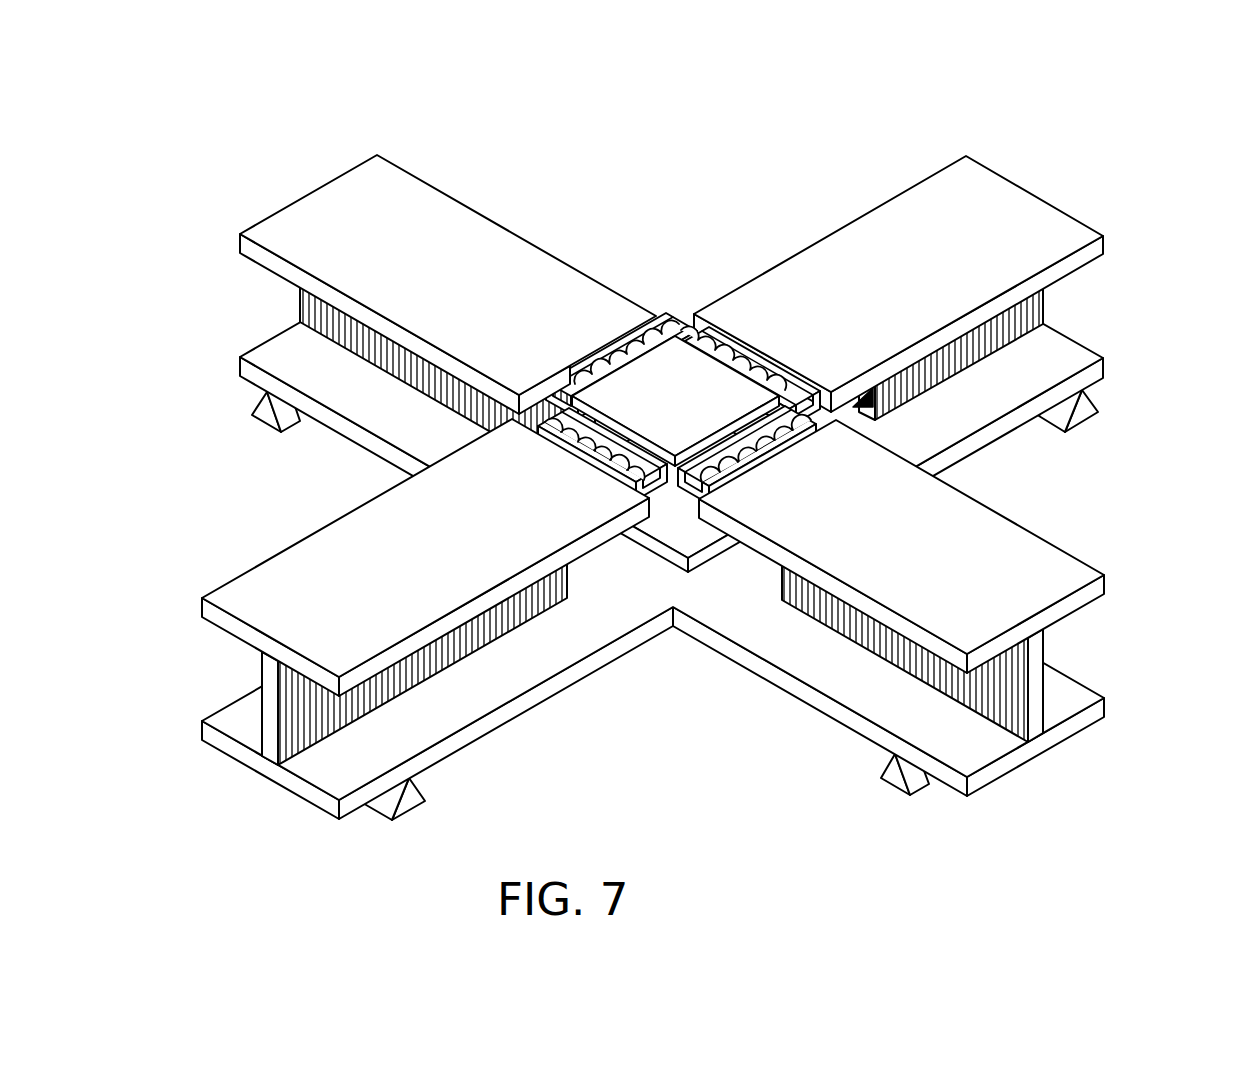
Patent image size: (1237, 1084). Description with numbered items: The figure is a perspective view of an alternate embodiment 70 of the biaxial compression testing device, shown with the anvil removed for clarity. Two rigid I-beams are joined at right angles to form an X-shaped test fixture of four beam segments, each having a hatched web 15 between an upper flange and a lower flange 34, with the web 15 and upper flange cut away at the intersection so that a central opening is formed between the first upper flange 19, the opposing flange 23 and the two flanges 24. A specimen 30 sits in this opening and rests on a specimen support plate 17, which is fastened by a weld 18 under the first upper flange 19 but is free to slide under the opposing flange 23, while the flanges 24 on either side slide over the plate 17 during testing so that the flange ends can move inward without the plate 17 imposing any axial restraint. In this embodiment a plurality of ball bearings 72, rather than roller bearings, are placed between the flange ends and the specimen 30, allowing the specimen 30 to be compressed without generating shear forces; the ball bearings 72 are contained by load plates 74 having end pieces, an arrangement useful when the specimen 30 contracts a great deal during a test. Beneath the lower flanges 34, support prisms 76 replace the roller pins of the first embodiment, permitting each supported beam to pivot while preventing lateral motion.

The alternate embodiment 70 is at (684, 290).
The flanges 24 is at (393, 200).
The opposing flange 23 is at (240, 593).
The first upper flange 19 is at (1108, 240).
The web 15 is at (302, 291).
The lower flanges 34 is at (290, 350).
The support prisms 76 is at (262, 407).
The ball bearings 72 is at (567, 433).
The load plates 74 is at (725, 348).
The specimen 30 is at (697, 398).
The specimen support plate 17 is at (680, 537).
The weld 18 is at (858, 400).